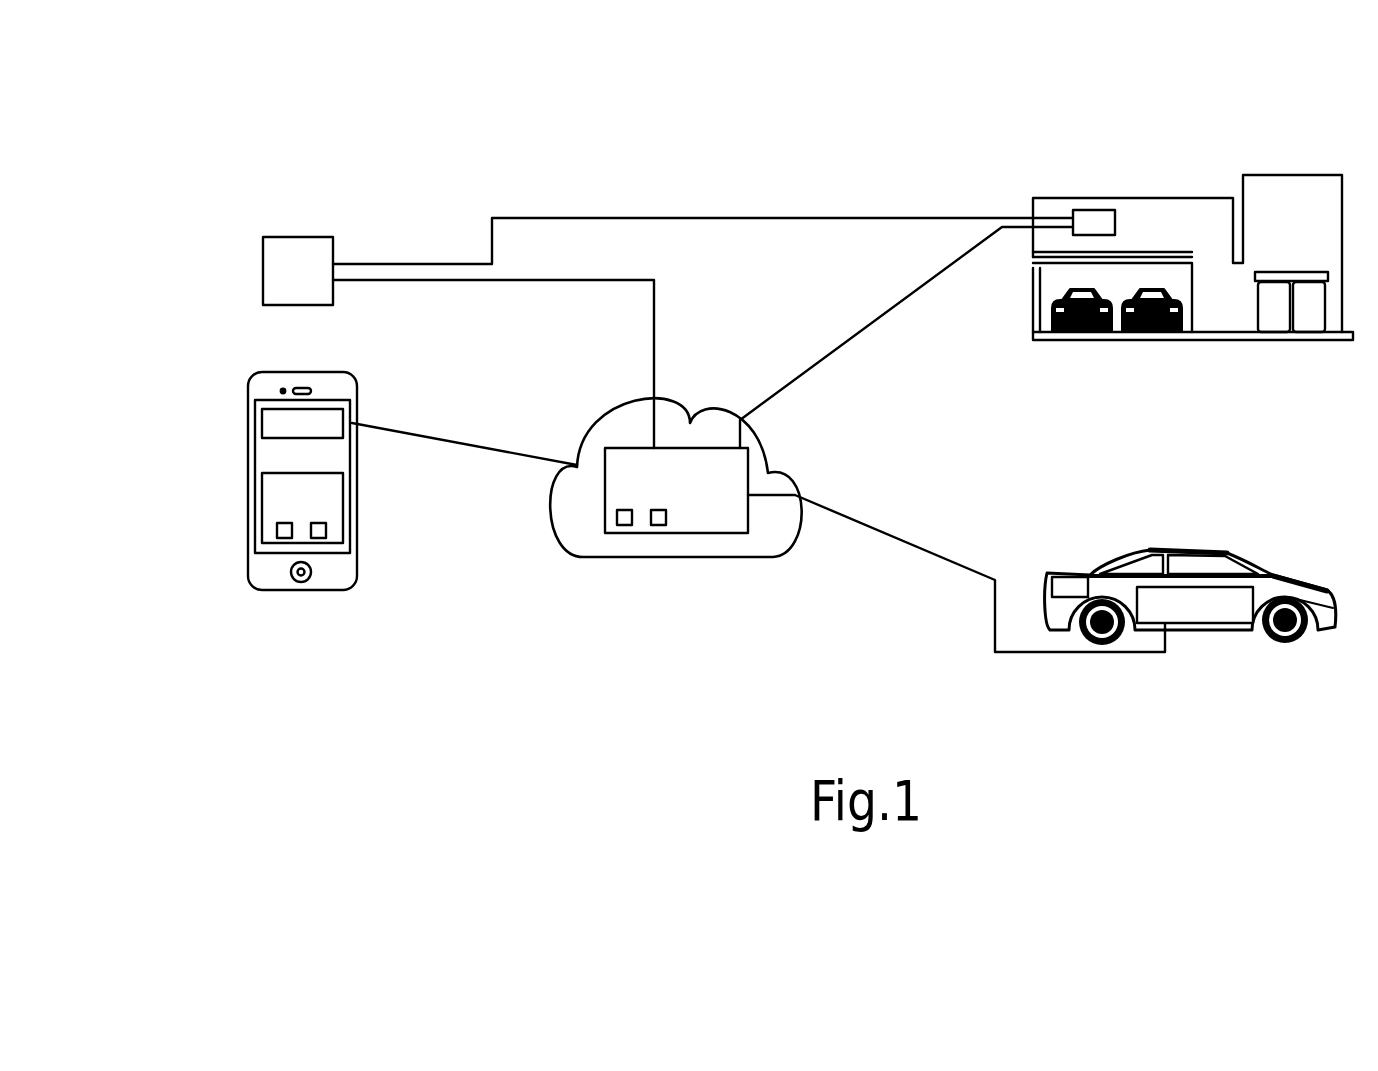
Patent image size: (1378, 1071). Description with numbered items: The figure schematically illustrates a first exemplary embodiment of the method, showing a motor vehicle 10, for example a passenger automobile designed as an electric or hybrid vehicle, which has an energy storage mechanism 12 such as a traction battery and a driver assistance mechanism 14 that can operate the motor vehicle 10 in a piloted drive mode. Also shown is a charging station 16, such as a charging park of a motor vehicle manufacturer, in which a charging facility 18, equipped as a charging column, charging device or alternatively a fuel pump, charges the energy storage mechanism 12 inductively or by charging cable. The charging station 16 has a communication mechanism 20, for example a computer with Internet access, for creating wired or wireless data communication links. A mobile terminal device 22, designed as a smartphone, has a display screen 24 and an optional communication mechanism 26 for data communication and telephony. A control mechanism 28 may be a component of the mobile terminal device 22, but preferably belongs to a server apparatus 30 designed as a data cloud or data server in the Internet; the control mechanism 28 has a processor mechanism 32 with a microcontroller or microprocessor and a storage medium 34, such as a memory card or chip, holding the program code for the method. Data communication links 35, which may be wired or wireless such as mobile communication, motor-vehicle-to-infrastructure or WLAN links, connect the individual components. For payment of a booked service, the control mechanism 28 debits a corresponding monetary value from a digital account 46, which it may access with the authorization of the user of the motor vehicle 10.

The motor vehicle 10 is at (1180, 549).
The energy storage mechanism 12 is at (1070, 577).
The driver assistance mechanism 14 is at (1207, 627).
The charging station 16 is at (1221, 144).
The charging facility 18 is at (1030, 303).
The communication mechanism 20 is at (1092, 210).
The mobile terminal device 22 is at (252, 497).
The display screen 24 is at (252, 453).
The communication mechanism 26 is at (252, 418).
The control mechanism 28 is at (252, 527).
The server apparatus 30 is at (596, 558).
The processor mechanism 32 is at (285, 540).
The storage medium 34 is at (318, 540).
The data communication link 35 is at (748, 218).
The digital account 46 is at (300, 237).